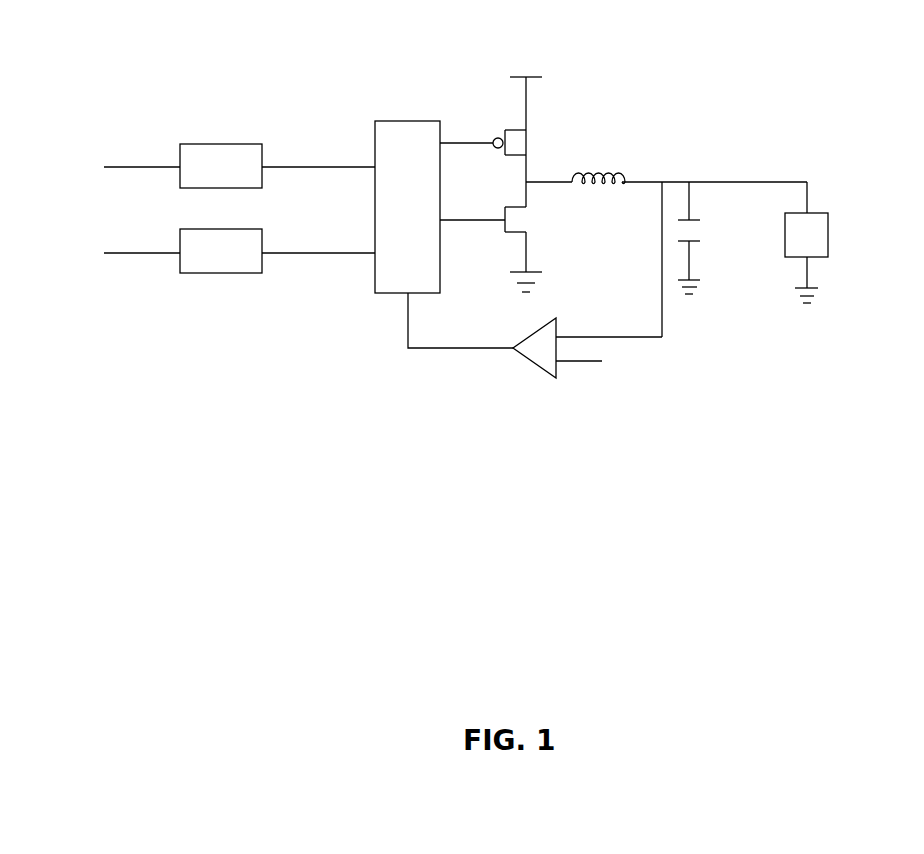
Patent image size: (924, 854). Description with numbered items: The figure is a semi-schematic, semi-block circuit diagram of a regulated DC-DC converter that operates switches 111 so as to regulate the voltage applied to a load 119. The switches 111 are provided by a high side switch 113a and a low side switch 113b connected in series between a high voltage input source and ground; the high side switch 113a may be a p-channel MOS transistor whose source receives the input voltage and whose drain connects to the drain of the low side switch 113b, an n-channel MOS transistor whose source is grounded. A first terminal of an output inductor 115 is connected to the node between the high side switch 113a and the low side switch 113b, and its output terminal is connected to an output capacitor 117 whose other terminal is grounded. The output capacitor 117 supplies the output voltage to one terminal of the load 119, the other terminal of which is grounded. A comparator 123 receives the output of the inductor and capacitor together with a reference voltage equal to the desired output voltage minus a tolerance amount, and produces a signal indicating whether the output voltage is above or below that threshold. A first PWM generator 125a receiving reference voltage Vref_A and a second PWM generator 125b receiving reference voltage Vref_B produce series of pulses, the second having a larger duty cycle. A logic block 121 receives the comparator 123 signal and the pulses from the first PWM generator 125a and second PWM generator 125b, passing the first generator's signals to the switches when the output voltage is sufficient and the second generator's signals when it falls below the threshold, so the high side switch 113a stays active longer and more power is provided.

The switches 111 is at (546, 54).
The high side switch 113a is at (510, 127).
The low side switch 113b is at (502, 235).
The output inductor 115 is at (608, 170).
The output capacitor 117 is at (698, 241).
The load 119 is at (828, 237).
The logic block 121 is at (375, 295).
The comparator 123 is at (530, 362).
The first PWM generator 125a is at (223, 142).
The second PWM generator 125b is at (218, 275).